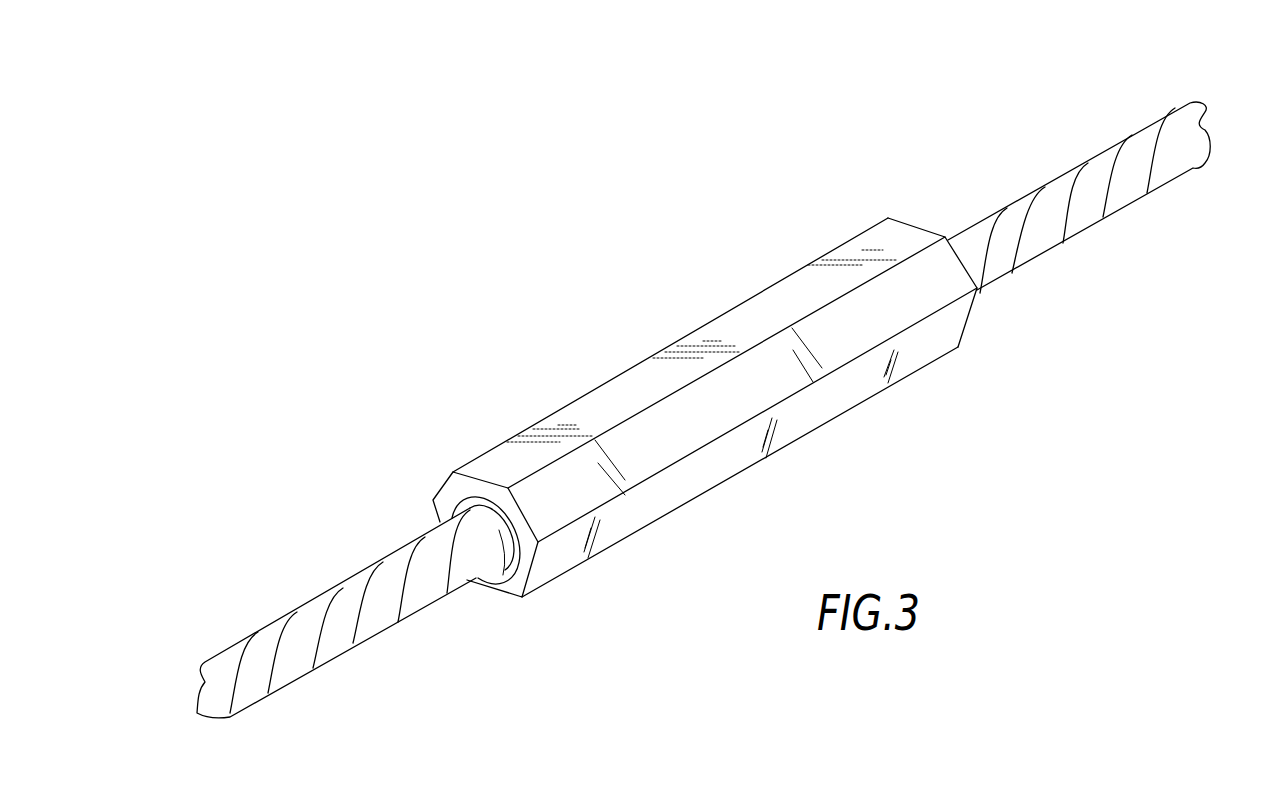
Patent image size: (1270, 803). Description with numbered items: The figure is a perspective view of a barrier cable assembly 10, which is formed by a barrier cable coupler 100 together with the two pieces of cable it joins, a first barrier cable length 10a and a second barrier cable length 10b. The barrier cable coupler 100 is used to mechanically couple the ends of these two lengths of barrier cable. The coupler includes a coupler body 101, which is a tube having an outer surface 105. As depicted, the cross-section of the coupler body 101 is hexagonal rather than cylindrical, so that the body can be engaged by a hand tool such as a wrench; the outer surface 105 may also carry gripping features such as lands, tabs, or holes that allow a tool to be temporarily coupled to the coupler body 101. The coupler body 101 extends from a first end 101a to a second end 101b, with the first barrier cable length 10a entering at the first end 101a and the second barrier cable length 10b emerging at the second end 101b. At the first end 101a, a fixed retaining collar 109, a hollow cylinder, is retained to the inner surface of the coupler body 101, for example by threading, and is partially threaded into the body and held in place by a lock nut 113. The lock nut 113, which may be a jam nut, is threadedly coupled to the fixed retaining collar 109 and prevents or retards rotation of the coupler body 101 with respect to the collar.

The barrier cable assembly 10 is at (425, 233).
The first barrier cable length 10a is at (238, 648).
The second barrier cable length 10b is at (1143, 130).
The barrier cable coupler 100 is at (715, 272).
The coupler body 101 is at (627, 371).
The first end 101a is at (415, 527).
The second end 101b is at (935, 207).
The outer surface 105 is at (835, 403).
The fixed retaining collar 109 is at (498, 590).
The lock nut 113 is at (513, 588).